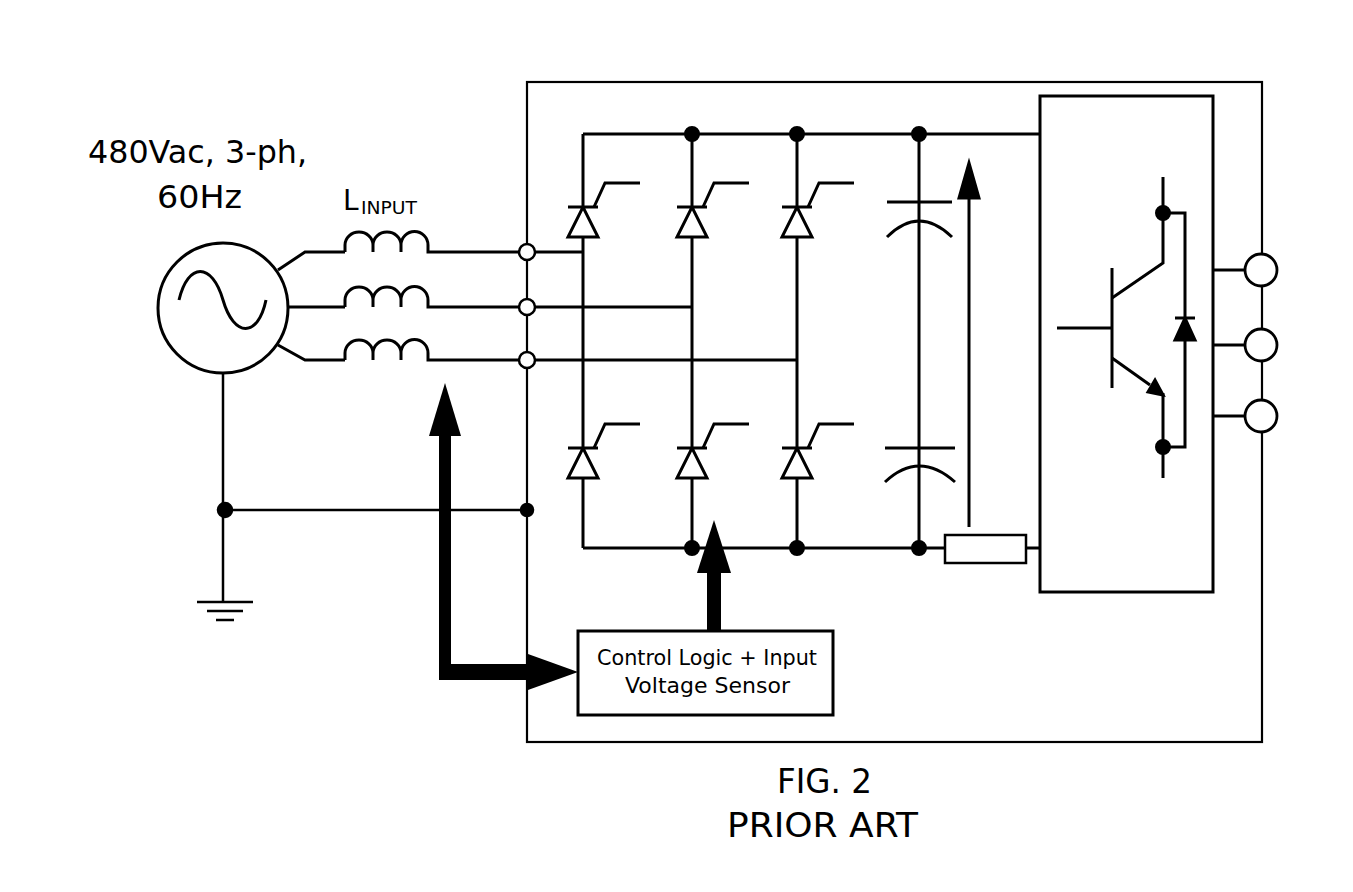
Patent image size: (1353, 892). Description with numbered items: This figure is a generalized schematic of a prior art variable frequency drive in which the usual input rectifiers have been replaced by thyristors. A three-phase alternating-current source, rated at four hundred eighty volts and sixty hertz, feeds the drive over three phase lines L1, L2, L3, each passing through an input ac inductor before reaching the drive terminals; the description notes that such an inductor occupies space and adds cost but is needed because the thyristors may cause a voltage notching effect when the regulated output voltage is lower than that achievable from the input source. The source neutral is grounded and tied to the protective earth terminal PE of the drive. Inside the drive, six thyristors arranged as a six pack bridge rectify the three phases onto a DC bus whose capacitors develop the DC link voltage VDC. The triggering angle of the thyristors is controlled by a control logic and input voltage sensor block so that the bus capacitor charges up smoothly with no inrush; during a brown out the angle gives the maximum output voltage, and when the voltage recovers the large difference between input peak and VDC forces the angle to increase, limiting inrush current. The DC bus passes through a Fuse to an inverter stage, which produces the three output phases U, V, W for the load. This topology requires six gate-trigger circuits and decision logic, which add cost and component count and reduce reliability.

The input phase line L1 with input inductor and terminal L1 is at (464, 244).
The input phase line L2 with input inductor and terminal L2 is at (518, 299).
The input phase line L3 with input inductor and terminal L3 is at (571, 353).
The protective earth connection PE is at (365, 496).
The DC bus voltage VDC is at (989, 345).
The DC bus fuse Fuse is at (992, 549).
The output phase terminal U is at (1260, 270).
The output phase terminal V is at (1260, 345).
The output phase terminal W is at (1262, 419).